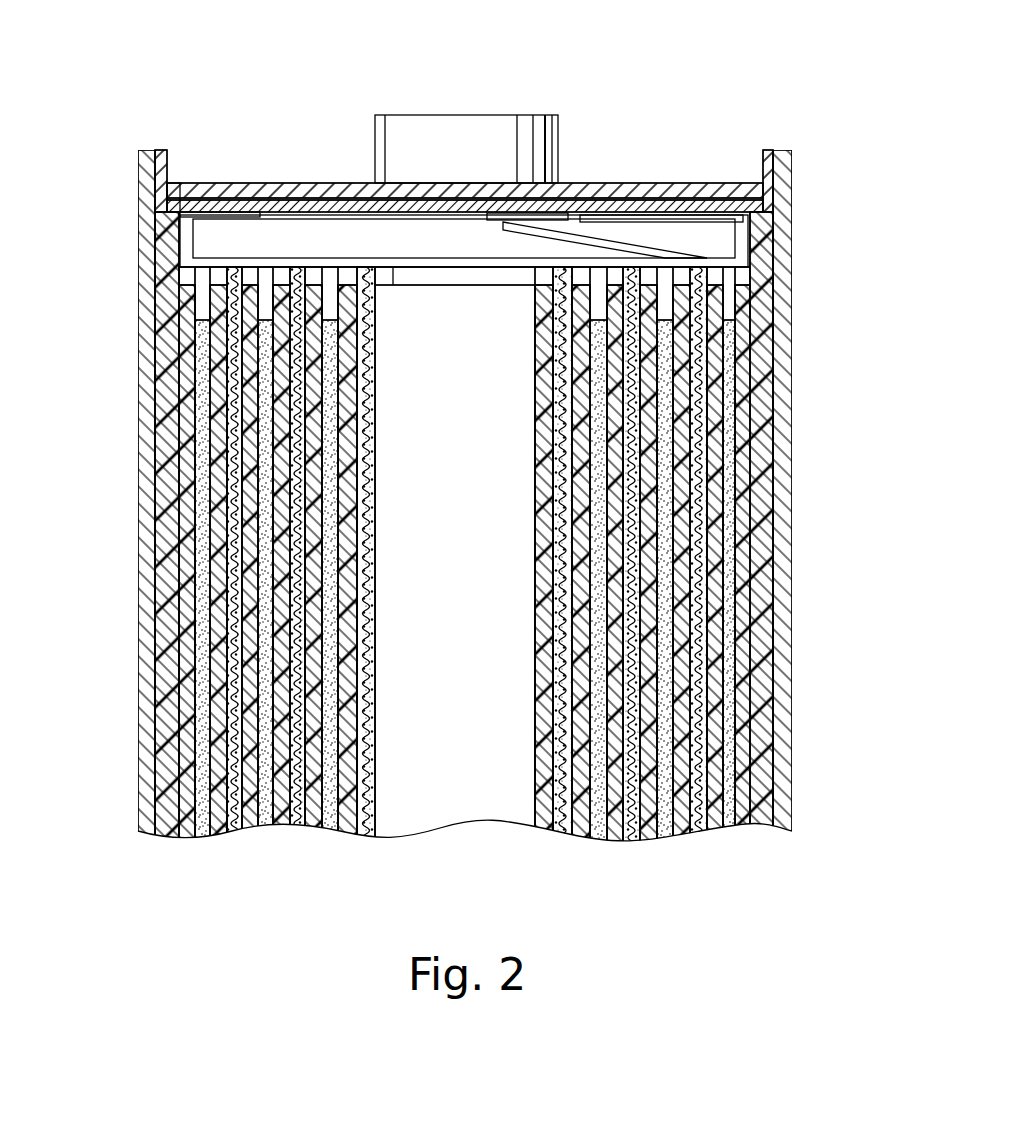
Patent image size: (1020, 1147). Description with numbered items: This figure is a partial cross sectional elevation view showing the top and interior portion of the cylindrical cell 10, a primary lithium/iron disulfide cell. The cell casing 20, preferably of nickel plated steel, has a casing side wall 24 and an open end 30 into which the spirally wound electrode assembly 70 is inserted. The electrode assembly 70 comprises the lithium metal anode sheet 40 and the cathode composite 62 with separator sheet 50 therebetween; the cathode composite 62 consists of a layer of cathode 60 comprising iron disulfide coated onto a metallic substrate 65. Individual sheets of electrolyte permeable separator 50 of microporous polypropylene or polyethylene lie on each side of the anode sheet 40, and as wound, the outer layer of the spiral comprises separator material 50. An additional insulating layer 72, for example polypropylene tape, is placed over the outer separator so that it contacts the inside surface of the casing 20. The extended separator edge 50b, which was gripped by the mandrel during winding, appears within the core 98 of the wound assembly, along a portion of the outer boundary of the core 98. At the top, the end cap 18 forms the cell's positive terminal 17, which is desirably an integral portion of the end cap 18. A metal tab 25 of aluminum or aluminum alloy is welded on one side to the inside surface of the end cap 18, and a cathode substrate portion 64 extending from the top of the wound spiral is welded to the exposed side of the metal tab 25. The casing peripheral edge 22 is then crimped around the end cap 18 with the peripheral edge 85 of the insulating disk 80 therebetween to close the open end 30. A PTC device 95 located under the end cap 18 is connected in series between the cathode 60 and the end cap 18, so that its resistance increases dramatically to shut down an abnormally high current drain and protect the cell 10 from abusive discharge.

The cylindrical cell 10 is at (466, 479).
The positive terminal 17 is at (460, 115).
The end cap 18 is at (276, 183).
The casing 20 is at (467, 532).
The casing peripheral edge 22 is at (453, 467).
The casing side wall 24 is at (138, 735).
The metal tab 25 is at (700, 247).
The open end 30 is at (170, 183).
The anode sheet 40 is at (205, 466).
The separator sheet 50 is at (459, 593).
The extended separator edge 50b is at (545, 826).
The cathode 60 is at (464, 595).
The cathode composite 62 is at (226, 617).
The cathode substrate portion 64 is at (745, 283).
The metallic substrate 65 is at (700, 620).
The spirally wound electrode assembly 70 is at (185, 704).
The insulating layer 72 is at (166, 372).
The insulating disk 80 is at (793, 186).
The peripheral edge of insulating disk 85 is at (170, 150).
The PTC device 95 is at (603, 215).
The core 98 is at (467, 718).